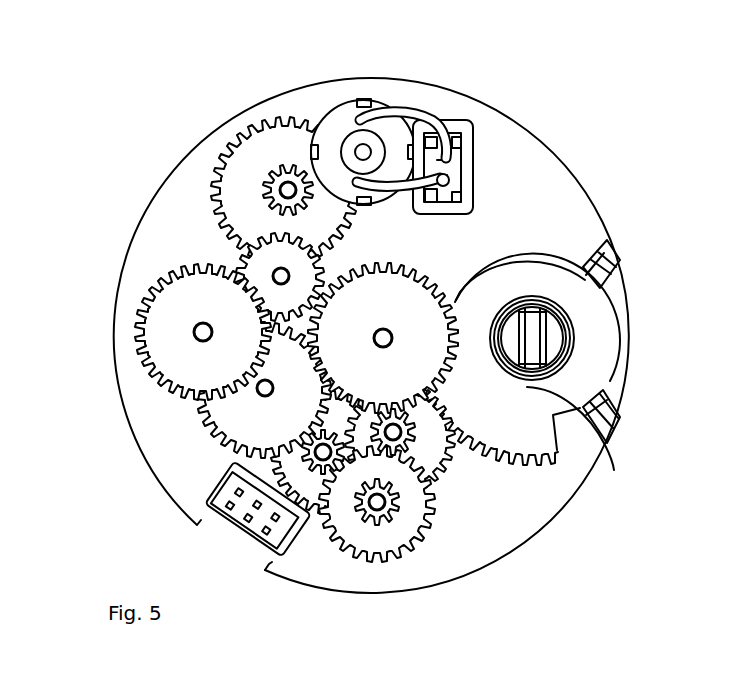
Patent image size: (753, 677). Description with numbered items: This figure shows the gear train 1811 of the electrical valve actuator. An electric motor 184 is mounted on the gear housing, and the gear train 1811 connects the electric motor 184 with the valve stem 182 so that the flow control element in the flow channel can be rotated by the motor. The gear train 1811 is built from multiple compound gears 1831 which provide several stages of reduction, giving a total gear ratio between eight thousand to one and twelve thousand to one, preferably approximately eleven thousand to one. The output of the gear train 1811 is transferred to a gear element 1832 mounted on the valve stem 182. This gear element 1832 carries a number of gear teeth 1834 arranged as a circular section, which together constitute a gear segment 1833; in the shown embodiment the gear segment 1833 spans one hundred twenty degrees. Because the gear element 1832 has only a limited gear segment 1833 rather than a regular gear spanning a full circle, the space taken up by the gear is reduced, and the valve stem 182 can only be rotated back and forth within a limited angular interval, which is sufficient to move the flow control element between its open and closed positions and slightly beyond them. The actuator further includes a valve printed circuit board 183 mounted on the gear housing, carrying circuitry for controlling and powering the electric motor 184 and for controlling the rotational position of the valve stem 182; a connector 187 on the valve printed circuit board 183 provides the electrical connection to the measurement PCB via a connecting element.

The valve stem 182 is at (536, 340).
The valve printed circuit board 183 is at (40, 0).
The electric motor 184 is at (340, 127).
The connector 187 is at (247, 530).
The gear train 1811 is at (167, 337).
The compound gears 1831 is at (243, 405).
The gear element 1832 is at (583, 408).
The gear segment 1833 is at (487, 432).
The gear teeth 1834 is at (557, 450).